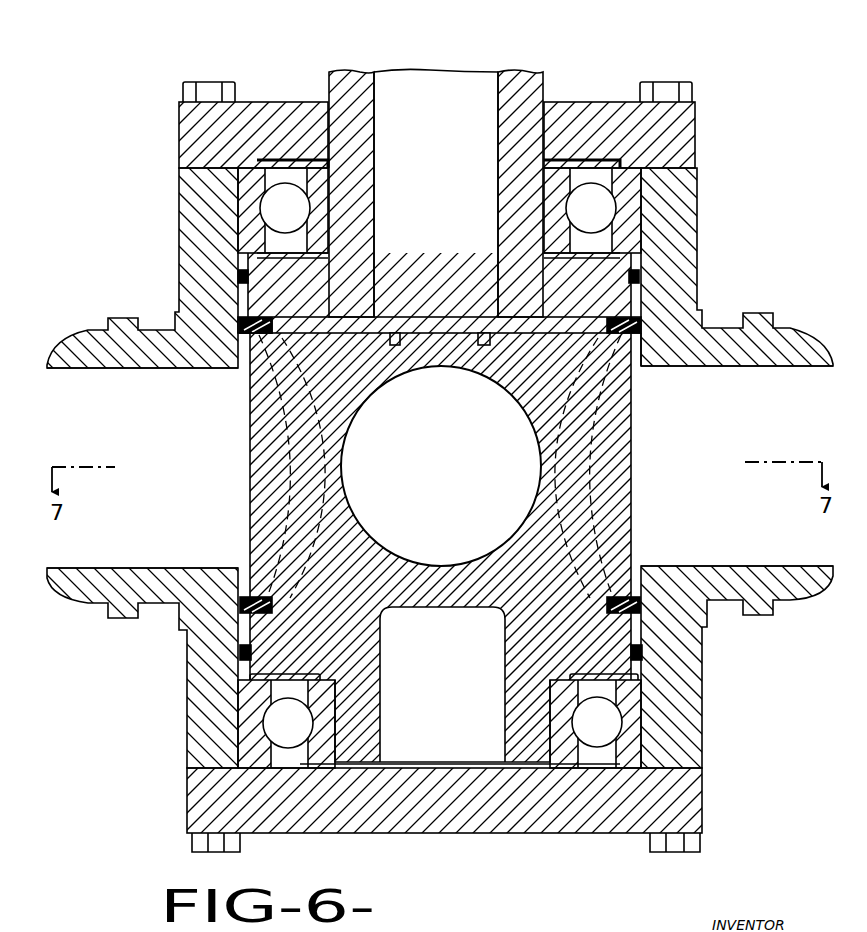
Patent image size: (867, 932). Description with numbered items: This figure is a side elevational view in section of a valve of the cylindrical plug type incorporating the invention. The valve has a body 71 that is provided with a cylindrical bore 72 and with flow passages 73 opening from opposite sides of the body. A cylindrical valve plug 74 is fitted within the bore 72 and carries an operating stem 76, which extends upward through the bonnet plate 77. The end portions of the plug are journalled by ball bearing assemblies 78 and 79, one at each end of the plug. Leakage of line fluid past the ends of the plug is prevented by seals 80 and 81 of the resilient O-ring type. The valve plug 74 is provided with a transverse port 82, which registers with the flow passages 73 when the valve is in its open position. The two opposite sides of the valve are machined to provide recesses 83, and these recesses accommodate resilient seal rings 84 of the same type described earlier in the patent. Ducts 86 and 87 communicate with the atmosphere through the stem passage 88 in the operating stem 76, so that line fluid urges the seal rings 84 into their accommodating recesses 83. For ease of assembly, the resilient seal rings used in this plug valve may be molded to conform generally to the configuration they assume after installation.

The body 71 is at (688, 235).
The cylindrical bore 72 is at (643, 348).
The flow passages 73 is at (82, 405).
The cylindrical valve plug 74 is at (468, 550).
The operating stem 76 is at (439, 167).
The bonnet plate 77 is at (688, 133).
The ball bearing assembly 78 is at (628, 210).
The ball bearing assembly 79 is at (632, 722).
The seal 80 is at (240, 277).
The seal 81 is at (645, 656).
The transverse port 82 is at (513, 495).
The recesses 83 is at (243, 360).
The resilient seal rings 84 is at (244, 396).
The duct 86 is at (530, 318).
The duct 87 is at (488, 332).
The stem passage 88 is at (463, 88).